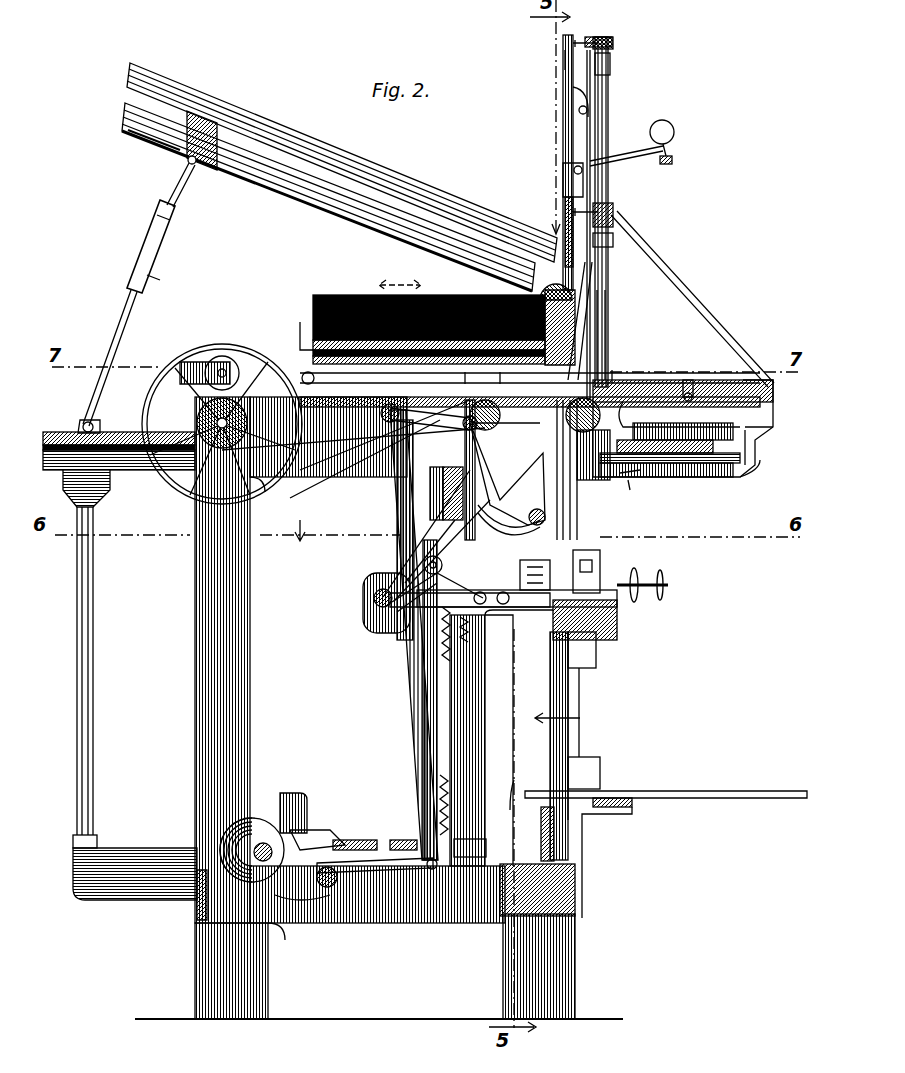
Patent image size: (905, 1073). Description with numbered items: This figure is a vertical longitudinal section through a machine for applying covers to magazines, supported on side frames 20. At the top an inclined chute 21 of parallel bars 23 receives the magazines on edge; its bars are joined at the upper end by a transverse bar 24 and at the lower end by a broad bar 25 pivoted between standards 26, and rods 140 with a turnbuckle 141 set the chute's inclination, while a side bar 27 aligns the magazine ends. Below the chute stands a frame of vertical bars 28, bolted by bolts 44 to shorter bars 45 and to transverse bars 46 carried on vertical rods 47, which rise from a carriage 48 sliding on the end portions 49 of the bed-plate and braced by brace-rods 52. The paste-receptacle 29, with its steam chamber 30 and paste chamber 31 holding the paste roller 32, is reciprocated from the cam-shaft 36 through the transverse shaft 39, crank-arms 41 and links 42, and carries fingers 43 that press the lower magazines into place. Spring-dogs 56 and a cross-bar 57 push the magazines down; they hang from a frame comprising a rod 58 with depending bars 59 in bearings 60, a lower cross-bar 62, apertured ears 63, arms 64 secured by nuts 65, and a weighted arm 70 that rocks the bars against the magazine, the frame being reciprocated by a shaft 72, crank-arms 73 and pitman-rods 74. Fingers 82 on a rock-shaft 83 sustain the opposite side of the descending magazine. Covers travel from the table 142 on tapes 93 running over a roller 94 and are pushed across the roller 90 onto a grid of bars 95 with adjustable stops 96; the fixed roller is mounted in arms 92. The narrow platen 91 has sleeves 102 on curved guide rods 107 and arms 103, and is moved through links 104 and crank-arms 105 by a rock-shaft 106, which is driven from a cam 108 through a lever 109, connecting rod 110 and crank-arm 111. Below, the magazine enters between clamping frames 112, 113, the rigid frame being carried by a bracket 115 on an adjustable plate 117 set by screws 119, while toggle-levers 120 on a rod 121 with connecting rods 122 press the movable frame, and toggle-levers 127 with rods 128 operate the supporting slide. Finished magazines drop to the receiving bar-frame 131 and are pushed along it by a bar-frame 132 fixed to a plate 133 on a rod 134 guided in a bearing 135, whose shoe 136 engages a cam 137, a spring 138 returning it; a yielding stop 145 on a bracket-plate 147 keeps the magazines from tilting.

The side frames 20 is at (195, 665).
The inclined chute 21 is at (192, 165).
The bars 23 is at (312, 200).
The transverse bar 24 is at (186, 155).
The broad bar 25 is at (426, 275).
The standards 26 is at (618, 335).
The bar 27 is at (368, 175).
The vertical bars 28 is at (563, 120).
The paste-receptacle 29 is at (429, 314).
The hot water or steam chamber 30 is at (300, 328).
The paste chamber 31 is at (590, 300).
The paste roller 32 is at (595, 282).
The cam-shaft 36 is at (254, 850).
The transverse shaft 39 is at (530, 388).
The crank-arms 41 is at (460, 416).
The links 42 is at (306, 470).
The vertical fingers 43 is at (540, 298).
The bolts 44 is at (580, 40).
The vertical bars 45 is at (612, 40).
The transverse bars 46 is at (615, 45).
The vertical rods 47 is at (608, 100).
The carriage 48 is at (750, 432).
The end portions of bed-plate 49 is at (742, 472).
The brace-rods 52 is at (695, 300).
The spring-dogs 56 is at (563, 180).
The cross-bar 57 is at (563, 60).
The transverse rod 58 is at (575, 168).
The depending bars 59 is at (565, 230).
The bearings 60 is at (596, 150).
The lower cross-bar 62 is at (614, 240).
The apertured ears 63 is at (612, 65).
The arms 64 is at (575, 95).
The nuts 65 is at (578, 110).
The weighted arm 70 is at (668, 160).
The shaft 72 is at (546, 517).
The crank-arms 73 is at (540, 490).
The pitman-rods 74 is at (608, 318).
The arms or fingers 82 is at (626, 365).
The rock-shaft 83 is at (489, 383).
The roller 90 is at (679, 413).
The platen 91 is at (541, 439).
The arms 92 is at (457, 375).
The tapes 93 is at (275, 380).
The roller 94 is at (172, 480).
The grid of bars 95 is at (688, 380).
The adjustable stops 96 is at (690, 392).
The sleeves 102 is at (646, 483).
The arms 103 is at (646, 498).
The links 104 is at (509, 530).
The crank-arms 105 is at (405, 538).
The rock-shaft 106 is at (400, 505).
The curved rods 107 is at (683, 389).
The cam 108 is at (258, 818).
The lever 109 is at (380, 880).
The connecting rod 110 is at (414, 740).
The crank-arm 111 is at (380, 453).
The clamping frame 112 is at (531, 572).
The clamping frame 113 is at (596, 564).
The angle-iron bracket 115 is at (600, 560).
The adjustable plate 117 is at (618, 605).
The screws 119 is at (662, 582).
The toggle-levers 120 is at (400, 620).
The rod 121 is at (372, 603).
The connecting rods 122 is at (450, 665).
The toggle-levers 127 is at (423, 565).
The vertical rods 128 is at (425, 672).
The receiving bar-frame 131 is at (700, 791).
The vertical bar-frame 132 is at (575, 760).
The transverse plate 133 is at (541, 820).
The rod 134 is at (525, 784).
The bearing 135 is at (412, 848).
The shoe 136 is at (315, 838).
The cam 137 is at (306, 808).
The spring 138 is at (325, 885).
The rods 140 is at (182, 190).
The turnbuckle 141 is at (162, 240).
The table 142 is at (60, 432).
The vertical plate or stop 145 is at (580, 700).
The bracket-plate 147 is at (598, 660).